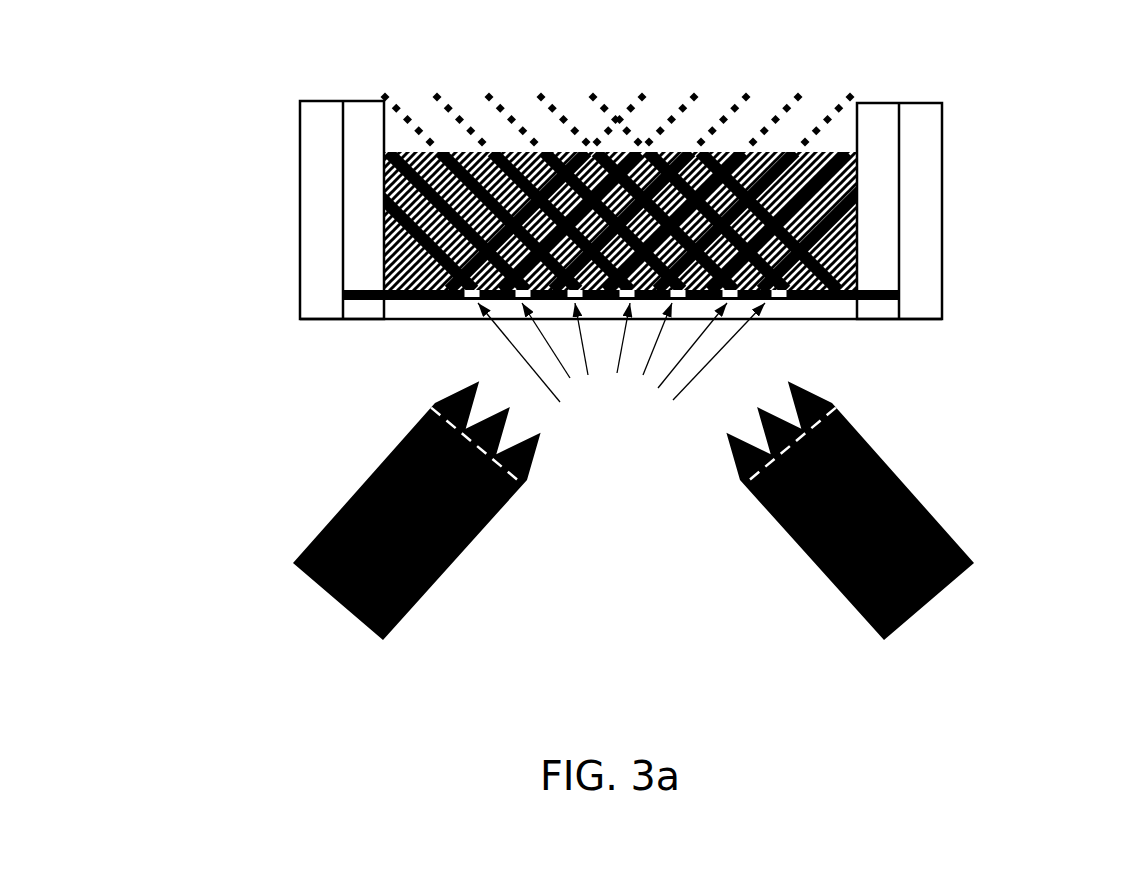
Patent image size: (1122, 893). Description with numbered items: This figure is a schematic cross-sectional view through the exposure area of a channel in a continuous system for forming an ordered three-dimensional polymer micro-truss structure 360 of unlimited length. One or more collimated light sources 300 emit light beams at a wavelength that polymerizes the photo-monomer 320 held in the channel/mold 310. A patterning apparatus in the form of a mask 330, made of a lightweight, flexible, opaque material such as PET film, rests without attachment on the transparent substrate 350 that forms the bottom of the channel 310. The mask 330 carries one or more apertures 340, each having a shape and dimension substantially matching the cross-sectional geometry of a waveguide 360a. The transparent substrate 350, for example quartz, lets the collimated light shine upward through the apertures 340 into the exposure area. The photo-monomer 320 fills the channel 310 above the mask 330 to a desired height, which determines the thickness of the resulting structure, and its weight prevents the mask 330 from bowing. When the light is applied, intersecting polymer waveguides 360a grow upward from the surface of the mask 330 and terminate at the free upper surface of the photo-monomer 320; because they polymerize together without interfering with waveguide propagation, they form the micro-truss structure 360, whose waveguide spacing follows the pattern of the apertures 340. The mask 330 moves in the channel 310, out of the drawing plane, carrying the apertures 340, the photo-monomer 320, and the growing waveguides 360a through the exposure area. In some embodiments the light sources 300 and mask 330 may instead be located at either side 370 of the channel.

The collimated light source 300 is at (770, 520).
The channel/mold 310 is at (335, 261).
The photo-monomer 320 is at (845, 192).
The mask 330 is at (377, 303).
The aperture 340 is at (621, 369).
The transparent substrate 350 is at (893, 322).
The micro-truss structure 360 is at (580, 212).
The polymer waveguide 360a is at (815, 161).
The side of the channel 370 is at (915, 253).